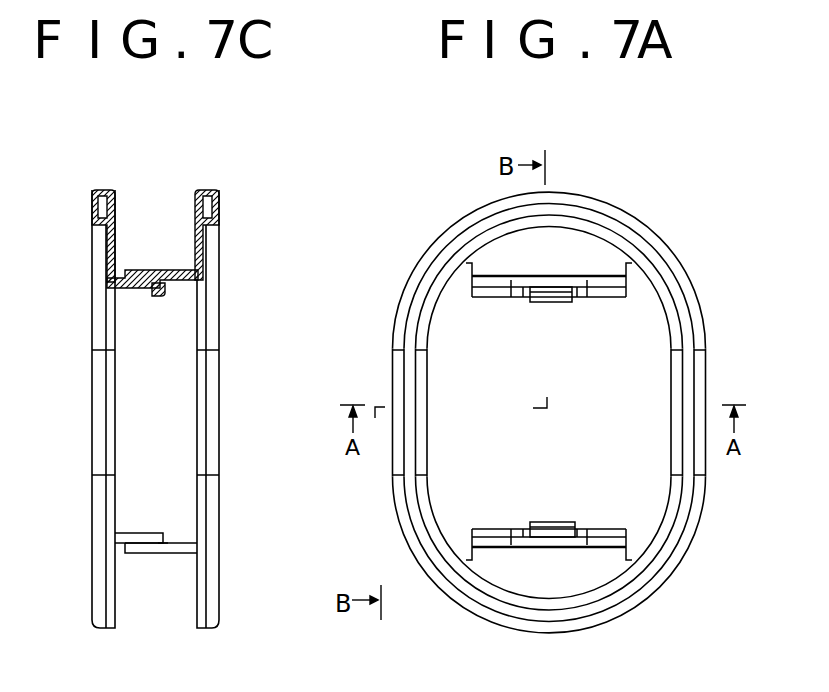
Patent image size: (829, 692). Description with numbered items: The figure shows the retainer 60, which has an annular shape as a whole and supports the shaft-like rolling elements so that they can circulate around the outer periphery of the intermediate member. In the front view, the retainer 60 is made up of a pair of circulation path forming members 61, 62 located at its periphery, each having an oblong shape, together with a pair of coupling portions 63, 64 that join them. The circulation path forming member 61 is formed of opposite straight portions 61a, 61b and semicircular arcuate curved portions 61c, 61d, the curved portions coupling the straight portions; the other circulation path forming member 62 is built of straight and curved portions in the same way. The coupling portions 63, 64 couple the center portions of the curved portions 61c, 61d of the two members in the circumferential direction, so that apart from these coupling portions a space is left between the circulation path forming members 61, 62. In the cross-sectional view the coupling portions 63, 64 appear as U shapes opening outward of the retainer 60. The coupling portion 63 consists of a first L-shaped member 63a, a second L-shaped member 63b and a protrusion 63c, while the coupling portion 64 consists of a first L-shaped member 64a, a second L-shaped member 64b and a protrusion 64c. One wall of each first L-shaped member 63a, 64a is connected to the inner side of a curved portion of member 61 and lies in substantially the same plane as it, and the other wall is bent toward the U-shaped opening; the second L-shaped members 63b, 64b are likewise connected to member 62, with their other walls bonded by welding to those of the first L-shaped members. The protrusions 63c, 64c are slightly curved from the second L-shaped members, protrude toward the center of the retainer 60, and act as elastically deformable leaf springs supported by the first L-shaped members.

In FIG. 7A, the retainer 60 is at (551, 404).
In FIG. 7C, the circulation path forming member 61 is at (209, 378).
In FIG. 7A, the circulation path forming member 61 is at (551, 422).
In FIG. 7A, the straight portion 61a is at (690, 373).
In FIG. 7A, the straight portion 61b is at (405, 363).
In FIG. 7A, the curved portion 61c is at (498, 602).
In FIG. 7A, the curved portion 61d is at (637, 220).
In FIG. 7C, the circulation path forming member 62 is at (98, 362).
In FIG. 7A, the coupling portion 63 is at (544, 498).
In FIG. 7C, the first L-shaped member 63a is at (188, 548).
In FIG. 7A, the first L-shaped member 63a is at (483, 542).
In FIG. 7C, the second L-shaped member 63b is at (122, 538).
In FIG. 7A, the second L-shaped member 63b is at (622, 528).
In FIG. 7C, the protrusion 63c is at (163, 548).
In FIG. 7A, the protrusion 63c is at (565, 527).
In FIG. 7C, the coupling portion 64 is at (157, 234).
In FIG. 7A, the coupling portion 64 is at (542, 325).
In FIG. 7C, the first L-shaped member 64a is at (205, 258).
In FIG. 7A, the first L-shaped member 64a is at (480, 285).
In FIG. 7C, the second L-shaped member 64b is at (108, 255).
In FIG. 7A, the second L-shaped member 64b is at (605, 292).
In FIG. 7C, the protrusion 64c is at (163, 270).
In FIG. 7A, the protrusion 64c is at (547, 298).